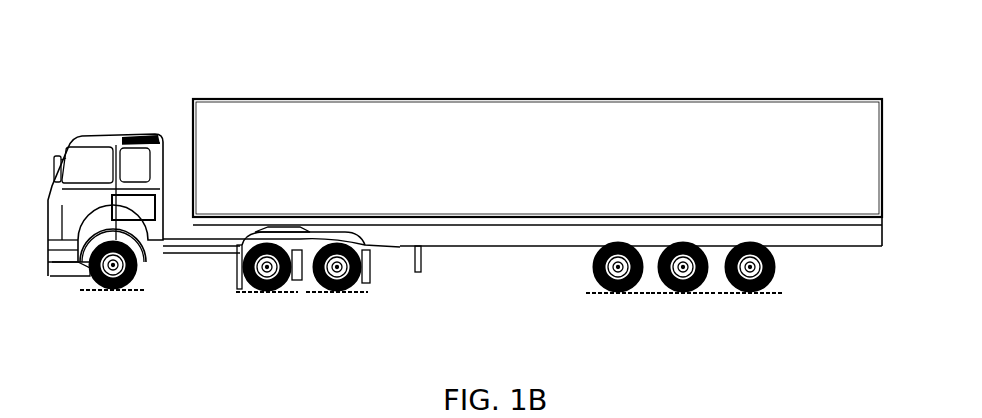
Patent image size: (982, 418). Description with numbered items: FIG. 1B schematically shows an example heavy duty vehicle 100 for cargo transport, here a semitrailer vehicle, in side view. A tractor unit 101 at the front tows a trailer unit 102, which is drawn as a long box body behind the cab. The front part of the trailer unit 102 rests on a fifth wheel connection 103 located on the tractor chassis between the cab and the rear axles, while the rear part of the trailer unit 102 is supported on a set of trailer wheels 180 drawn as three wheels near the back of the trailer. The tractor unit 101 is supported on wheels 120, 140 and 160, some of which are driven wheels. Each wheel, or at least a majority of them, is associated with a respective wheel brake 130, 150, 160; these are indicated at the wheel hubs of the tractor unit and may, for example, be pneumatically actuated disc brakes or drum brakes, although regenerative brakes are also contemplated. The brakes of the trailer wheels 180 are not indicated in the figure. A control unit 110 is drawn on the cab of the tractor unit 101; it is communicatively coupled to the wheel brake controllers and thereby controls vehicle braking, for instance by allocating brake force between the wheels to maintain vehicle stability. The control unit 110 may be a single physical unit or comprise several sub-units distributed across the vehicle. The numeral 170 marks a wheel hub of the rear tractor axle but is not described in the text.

The vehicle 100 is at (100, 44).
The tractor unit 101 is at (101, 142).
The trailer unit 102 is at (386, 103).
The fifth wheel connection 103 is at (280, 230).
The control unit 110 is at (133, 207).
The wheel 120 is at (97, 283).
The wheel brake 130 is at (118, 270).
The wheel 140 is at (247, 280).
The wheel brake 150 is at (268, 272).
The wheel 160 is at (318, 283).
The second rear tractor wheel hub 170 is at (338, 272).
The trailer wheels 180 is at (756, 323).